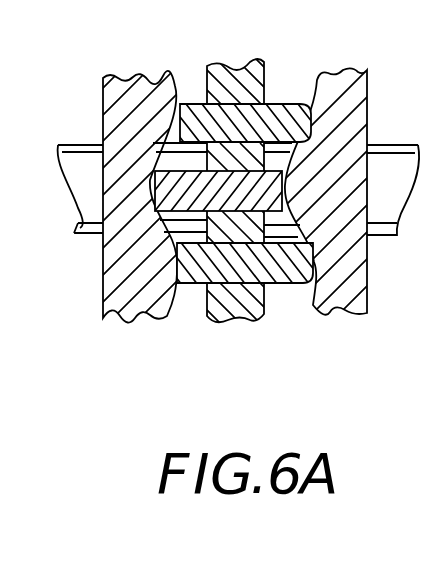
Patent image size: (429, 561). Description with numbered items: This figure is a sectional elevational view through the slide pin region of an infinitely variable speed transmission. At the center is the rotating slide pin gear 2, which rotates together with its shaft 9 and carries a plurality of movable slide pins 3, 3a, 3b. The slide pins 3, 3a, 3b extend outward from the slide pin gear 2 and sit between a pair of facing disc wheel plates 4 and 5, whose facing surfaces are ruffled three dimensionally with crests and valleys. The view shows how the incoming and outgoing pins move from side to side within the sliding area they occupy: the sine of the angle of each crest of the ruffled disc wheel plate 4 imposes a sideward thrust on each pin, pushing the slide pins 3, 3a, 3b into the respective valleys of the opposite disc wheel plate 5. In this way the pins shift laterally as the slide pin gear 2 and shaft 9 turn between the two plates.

The slide pin gear 2 is at (234, 70).
The slide pin 3 is at (290, 262).
The slide pin 3a is at (104, 116).
The slide pin 3b is at (293, 104).
The disc wheel plate 4 is at (348, 298).
The disc wheel plate 5 is at (137, 303).
The shaft 9 is at (393, 160).